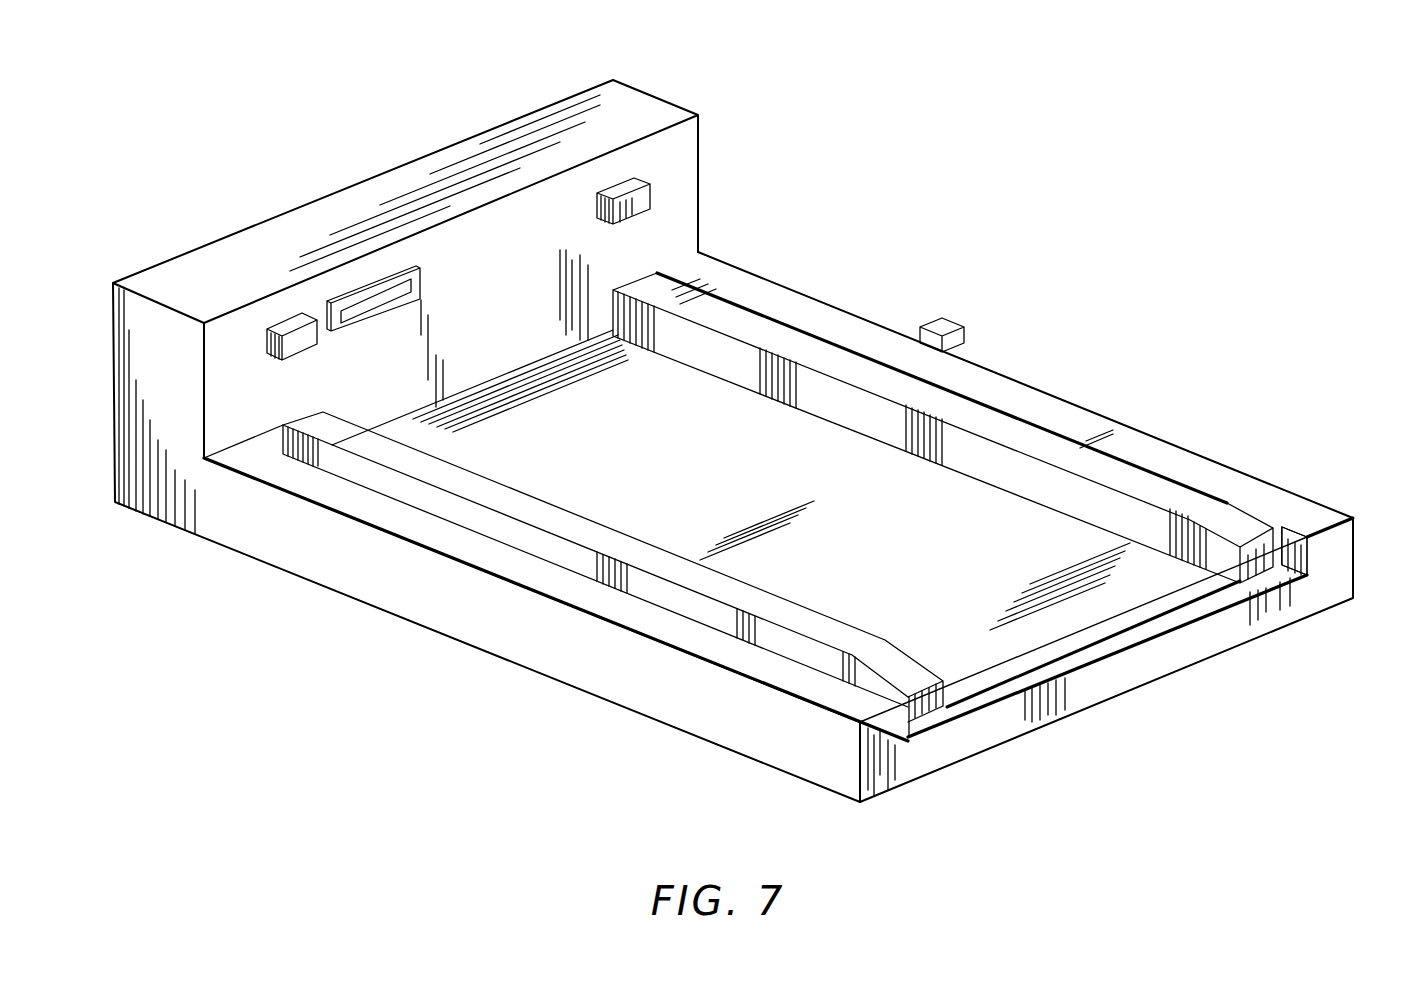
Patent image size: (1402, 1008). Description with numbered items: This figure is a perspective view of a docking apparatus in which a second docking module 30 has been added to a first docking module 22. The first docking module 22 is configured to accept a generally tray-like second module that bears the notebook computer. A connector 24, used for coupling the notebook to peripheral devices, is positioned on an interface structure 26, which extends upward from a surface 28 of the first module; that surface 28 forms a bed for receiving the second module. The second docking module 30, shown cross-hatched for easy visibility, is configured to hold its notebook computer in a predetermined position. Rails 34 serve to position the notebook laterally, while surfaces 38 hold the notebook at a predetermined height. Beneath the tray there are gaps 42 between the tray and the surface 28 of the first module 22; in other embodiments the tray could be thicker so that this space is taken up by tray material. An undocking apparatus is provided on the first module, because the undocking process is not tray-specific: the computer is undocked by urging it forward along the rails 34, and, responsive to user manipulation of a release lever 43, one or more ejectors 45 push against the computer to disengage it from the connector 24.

The first docking module 22 is at (262, 523).
The connector 24 is at (374, 288).
The interface structure 26 is at (612, 115).
The surface 28 is at (953, 706).
The second docking module 30 is at (612, 452).
The rails 34 is at (1142, 487).
The surfaces 38 is at (1037, 650).
The gaps 42 is at (1105, 648).
The release lever 43 is at (933, 312).
The ejectors 45 is at (292, 320).